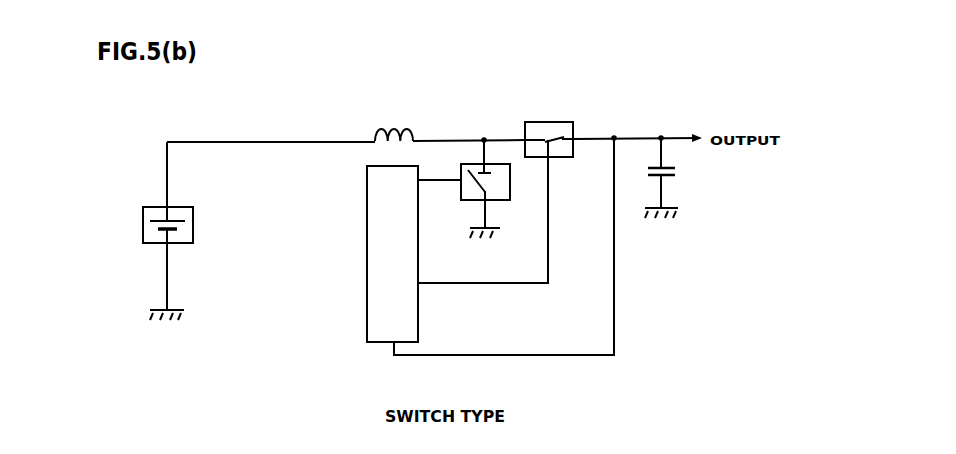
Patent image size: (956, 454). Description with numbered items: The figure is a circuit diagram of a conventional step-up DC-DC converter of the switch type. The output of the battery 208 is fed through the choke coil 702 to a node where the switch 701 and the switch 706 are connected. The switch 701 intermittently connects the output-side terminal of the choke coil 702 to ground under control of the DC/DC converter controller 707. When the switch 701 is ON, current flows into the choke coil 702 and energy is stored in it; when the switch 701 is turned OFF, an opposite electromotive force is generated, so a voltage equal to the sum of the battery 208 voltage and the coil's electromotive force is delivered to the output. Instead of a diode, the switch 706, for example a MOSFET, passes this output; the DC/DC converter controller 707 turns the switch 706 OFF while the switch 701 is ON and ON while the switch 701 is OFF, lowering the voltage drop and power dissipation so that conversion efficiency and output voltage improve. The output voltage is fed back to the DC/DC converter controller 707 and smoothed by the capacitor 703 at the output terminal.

The battery 208 is at (183, 243).
The switch 701 is at (510, 192).
The choke coil 702 is at (380, 132).
The capacitor 703 is at (675, 172).
The switch 706 is at (540, 121).
The DC/DC converter controller 707 is at (367, 312).